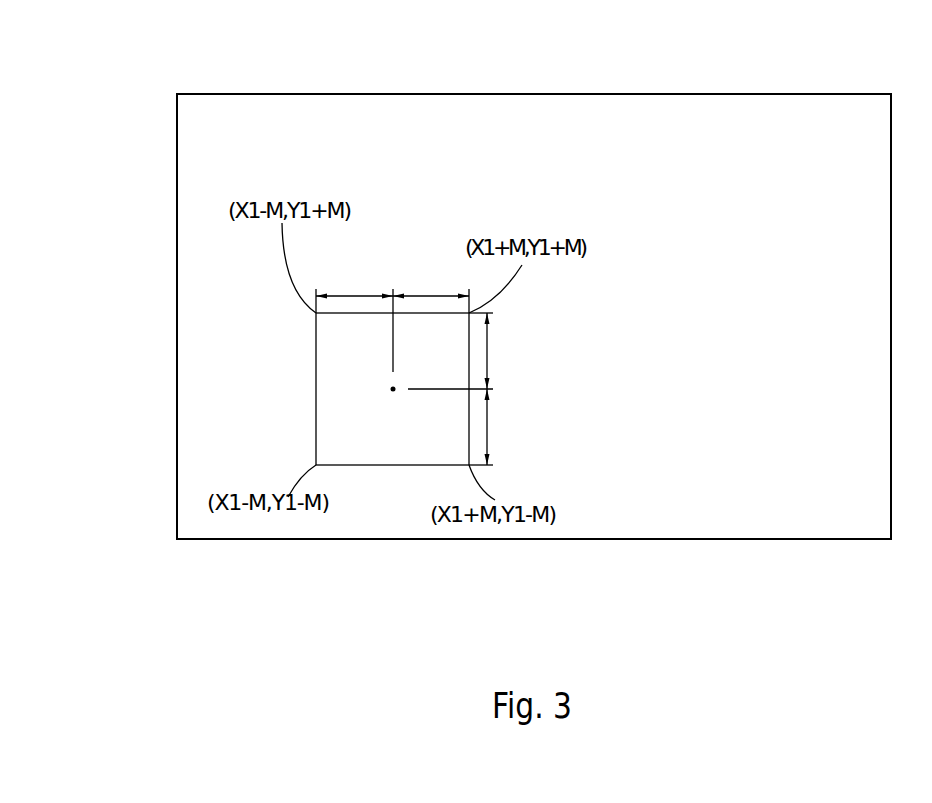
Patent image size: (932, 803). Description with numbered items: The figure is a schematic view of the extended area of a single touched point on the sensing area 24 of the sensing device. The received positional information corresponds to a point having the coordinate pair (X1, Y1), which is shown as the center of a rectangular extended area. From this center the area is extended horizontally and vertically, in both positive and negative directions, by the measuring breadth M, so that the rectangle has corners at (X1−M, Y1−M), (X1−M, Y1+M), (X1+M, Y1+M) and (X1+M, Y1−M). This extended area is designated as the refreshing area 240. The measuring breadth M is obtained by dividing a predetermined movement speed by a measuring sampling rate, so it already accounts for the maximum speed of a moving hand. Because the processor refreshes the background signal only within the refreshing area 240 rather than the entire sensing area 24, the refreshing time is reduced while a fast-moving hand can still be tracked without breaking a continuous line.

The sensing area 24 is at (800, 94).
The refreshing area 240 is at (316, 430).
The coordinate pair (X1, Y1) X1 is at (393, 389).
The measuring breadth M is at (411, 367).